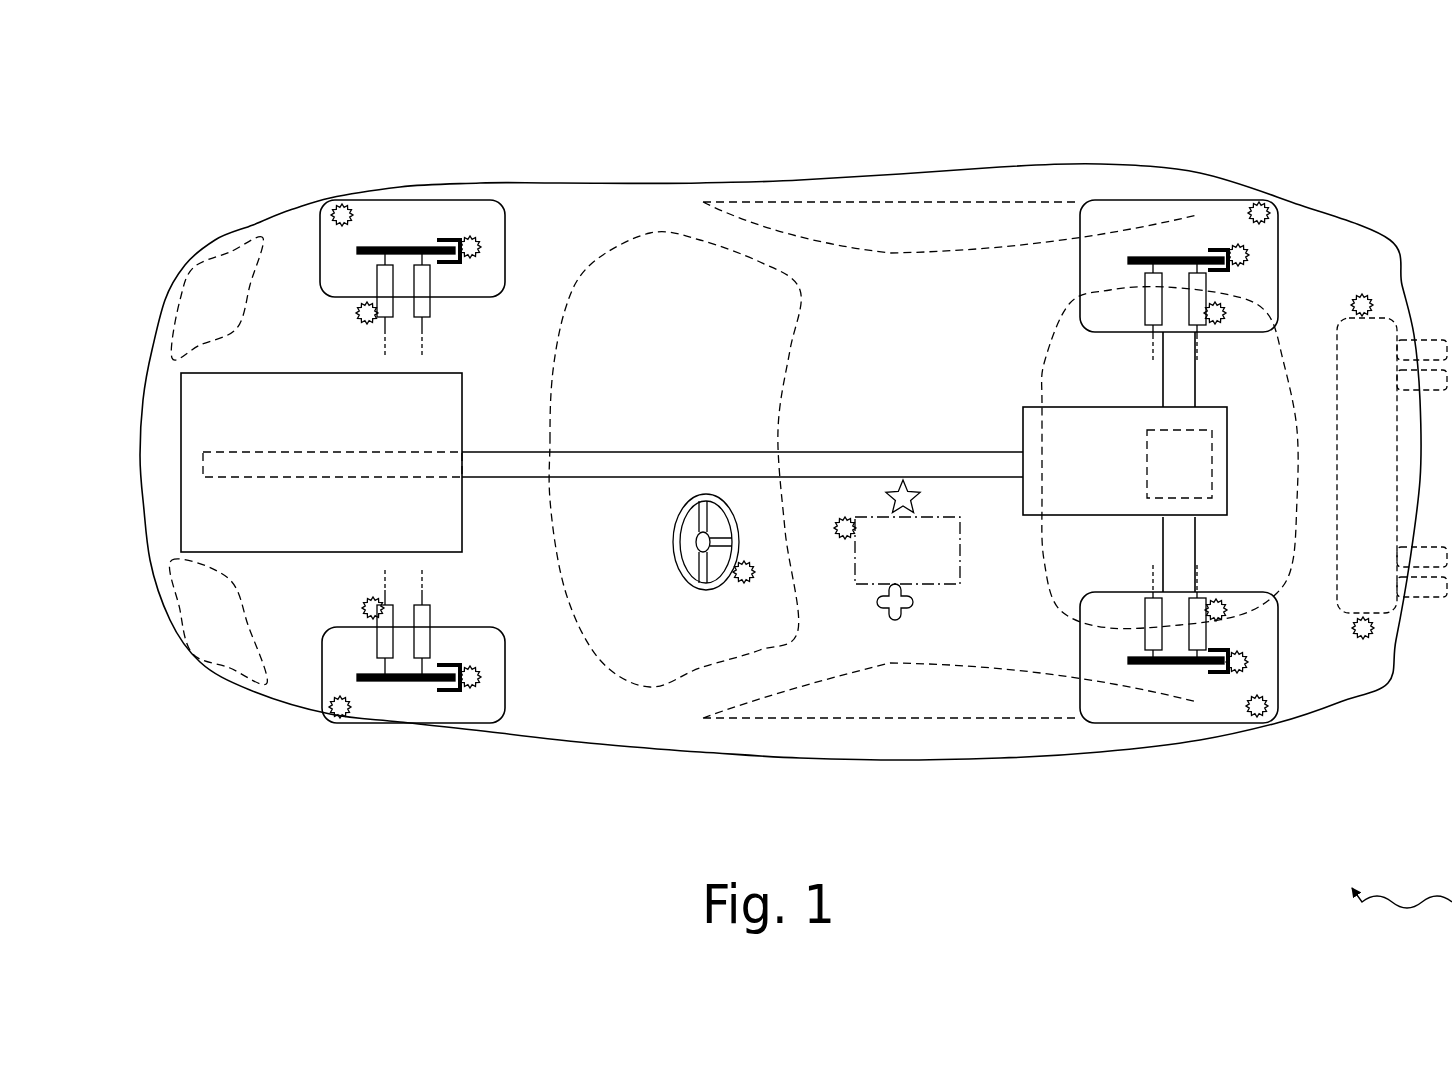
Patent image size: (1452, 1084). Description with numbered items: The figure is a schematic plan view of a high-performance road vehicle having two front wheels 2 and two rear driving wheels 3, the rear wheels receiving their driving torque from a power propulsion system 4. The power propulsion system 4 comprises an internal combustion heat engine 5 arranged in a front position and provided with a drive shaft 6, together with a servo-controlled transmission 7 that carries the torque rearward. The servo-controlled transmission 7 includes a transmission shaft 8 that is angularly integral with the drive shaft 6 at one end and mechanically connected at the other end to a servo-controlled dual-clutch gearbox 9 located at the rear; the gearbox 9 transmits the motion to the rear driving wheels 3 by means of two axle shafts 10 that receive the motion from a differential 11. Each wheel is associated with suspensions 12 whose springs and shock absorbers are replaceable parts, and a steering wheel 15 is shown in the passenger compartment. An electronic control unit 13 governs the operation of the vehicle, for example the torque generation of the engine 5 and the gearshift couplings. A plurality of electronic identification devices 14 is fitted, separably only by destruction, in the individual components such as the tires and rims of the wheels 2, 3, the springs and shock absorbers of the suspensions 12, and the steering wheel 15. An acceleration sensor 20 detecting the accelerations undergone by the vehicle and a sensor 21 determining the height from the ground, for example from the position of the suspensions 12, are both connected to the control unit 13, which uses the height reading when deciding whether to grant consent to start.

The front wheels 2 is at (416, 218).
The rear driving wheels 3 is at (1228, 217).
The power propulsion system 4 is at (232, 212).
The internal combustion heat engine 5 is at (190, 400).
The drive shaft 6 is at (305, 460).
The servo-controlled transmission 7 is at (818, 152).
The transmission shaft 8 is at (838, 470).
The servo-controlled dual-clutch gearbox 9 is at (1033, 440).
The axle shafts 10 is at (1175, 358).
The differential 11 is at (1179, 464).
The suspensions 12 is at (452, 282).
The electronic control unit 13 is at (1197, 110).
The electronic identification device 14 is at (342, 204).
The steering wheel 15 is at (683, 565).
The acceleration sensor 20 is at (905, 484).
The sensor 21 is at (902, 601).